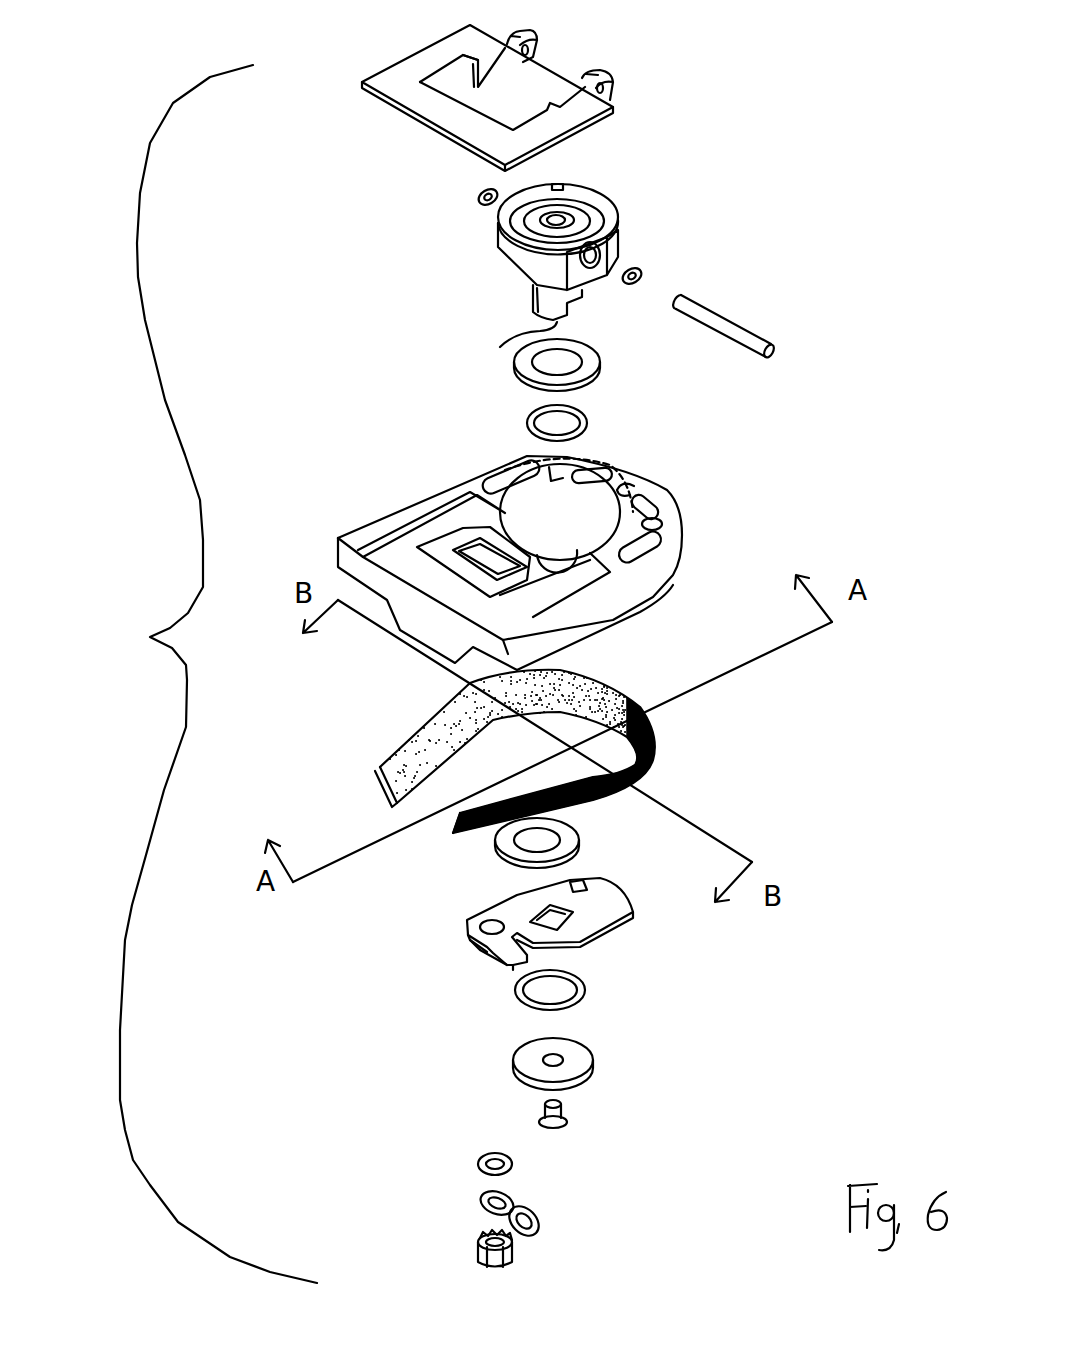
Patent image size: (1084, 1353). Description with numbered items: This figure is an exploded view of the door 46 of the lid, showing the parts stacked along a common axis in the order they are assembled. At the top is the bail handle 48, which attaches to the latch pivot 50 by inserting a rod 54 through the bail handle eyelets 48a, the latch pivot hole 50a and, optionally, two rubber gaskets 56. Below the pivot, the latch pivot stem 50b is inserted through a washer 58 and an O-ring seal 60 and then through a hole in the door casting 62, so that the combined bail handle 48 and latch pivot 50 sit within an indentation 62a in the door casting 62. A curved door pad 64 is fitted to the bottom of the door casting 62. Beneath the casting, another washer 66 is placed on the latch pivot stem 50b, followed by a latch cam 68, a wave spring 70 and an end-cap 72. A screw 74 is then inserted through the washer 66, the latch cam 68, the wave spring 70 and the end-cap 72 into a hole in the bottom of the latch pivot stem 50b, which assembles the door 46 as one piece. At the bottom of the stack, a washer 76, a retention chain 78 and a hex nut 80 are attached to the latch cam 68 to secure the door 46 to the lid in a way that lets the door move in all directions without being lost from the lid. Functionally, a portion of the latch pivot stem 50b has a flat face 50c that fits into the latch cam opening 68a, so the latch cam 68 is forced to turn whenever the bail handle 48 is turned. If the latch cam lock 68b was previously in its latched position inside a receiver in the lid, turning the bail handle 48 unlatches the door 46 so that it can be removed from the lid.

The door 46 is at (108, 630).
The bail handle 48 is at (443, 48).
The bail handle eyelets 48a is at (600, 63).
The latch pivot 50 is at (600, 205).
The latch pivot hole 50a is at (597, 260).
The latch pivot stem 50b is at (530, 296).
The flat face 50c is at (504, 345).
The rod 54 is at (758, 338).
The rubber gaskets 56 is at (477, 202).
The washer 58 is at (600, 367).
The O-ring seal 60 is at (588, 424).
The door casting 62 is at (688, 562).
The indentation 62a is at (556, 523).
The curved door pad 64 is at (655, 706).
The washer 66 is at (582, 845).
The latch cam 68 is at (630, 908).
The latch cam opening 68a is at (540, 917).
The latch cam lock 68b is at (512, 962).
The wave spring 70 is at (586, 992).
The end-cap 72 is at (597, 1063).
The screw 74 is at (572, 1122).
The washer 76 is at (478, 1165).
The retention chain 78 is at (540, 1222).
The hex nut 80 is at (478, 1252).